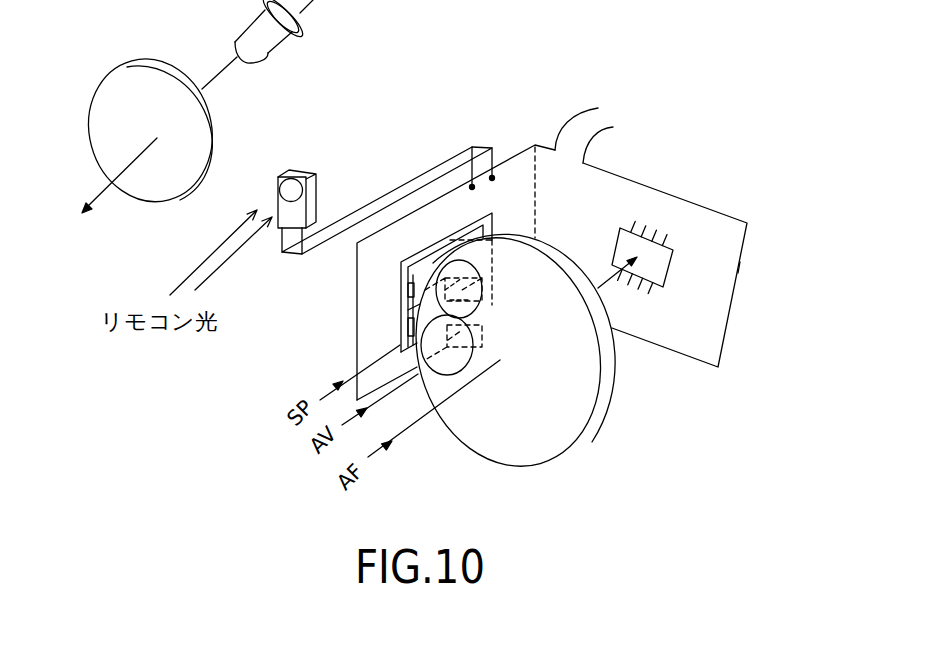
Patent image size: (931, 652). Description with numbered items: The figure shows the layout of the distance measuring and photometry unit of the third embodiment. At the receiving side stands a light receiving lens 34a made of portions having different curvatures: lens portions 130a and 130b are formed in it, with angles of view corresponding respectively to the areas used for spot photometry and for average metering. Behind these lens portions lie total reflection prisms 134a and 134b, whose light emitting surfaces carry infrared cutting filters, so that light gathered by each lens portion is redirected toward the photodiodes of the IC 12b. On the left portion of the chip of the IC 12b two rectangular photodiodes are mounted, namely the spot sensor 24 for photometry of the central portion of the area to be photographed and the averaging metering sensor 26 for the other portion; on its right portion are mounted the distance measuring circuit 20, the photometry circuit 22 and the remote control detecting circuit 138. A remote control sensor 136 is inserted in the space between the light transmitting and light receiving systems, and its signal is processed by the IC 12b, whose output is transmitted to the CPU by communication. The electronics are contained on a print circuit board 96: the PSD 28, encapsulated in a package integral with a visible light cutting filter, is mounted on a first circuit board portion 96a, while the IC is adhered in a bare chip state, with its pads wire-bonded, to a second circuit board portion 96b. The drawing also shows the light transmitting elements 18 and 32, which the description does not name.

The light emitting lamp 18 is at (272, 52).
The reflector disc 32 is at (180, 202).
The remote control sensor 136 is at (290, 168).
The second circuit board portion 96b is at (371, 232).
The remote control detecting circuit 138 is at (473, 150).
The IC 12b is at (478, 222).
The photometry circuit 22 is at (457, 247).
The distance measuring circuit 20 is at (498, 245).
The spot sensor 24 is at (413, 275).
The lens portion 130a is at (433, 287).
The averaging metering sensor 26 is at (420, 318).
The lens portion 130b is at (423, 352).
The total reflection prism 134a is at (483, 297).
The total reflection prism 134b is at (482, 338).
The light receiving lens 34a is at (522, 468).
The print circuit board 96 is at (643, 178).
The first circuit board portion 96a is at (738, 273).
The PSD 28 is at (670, 275).